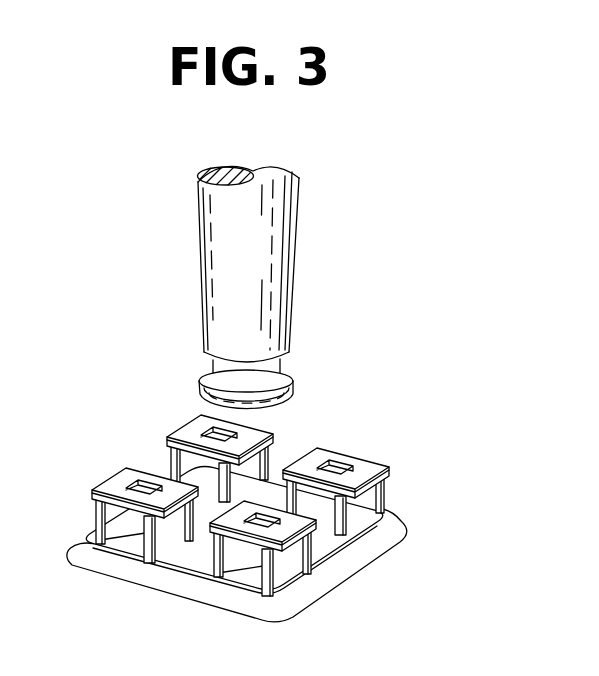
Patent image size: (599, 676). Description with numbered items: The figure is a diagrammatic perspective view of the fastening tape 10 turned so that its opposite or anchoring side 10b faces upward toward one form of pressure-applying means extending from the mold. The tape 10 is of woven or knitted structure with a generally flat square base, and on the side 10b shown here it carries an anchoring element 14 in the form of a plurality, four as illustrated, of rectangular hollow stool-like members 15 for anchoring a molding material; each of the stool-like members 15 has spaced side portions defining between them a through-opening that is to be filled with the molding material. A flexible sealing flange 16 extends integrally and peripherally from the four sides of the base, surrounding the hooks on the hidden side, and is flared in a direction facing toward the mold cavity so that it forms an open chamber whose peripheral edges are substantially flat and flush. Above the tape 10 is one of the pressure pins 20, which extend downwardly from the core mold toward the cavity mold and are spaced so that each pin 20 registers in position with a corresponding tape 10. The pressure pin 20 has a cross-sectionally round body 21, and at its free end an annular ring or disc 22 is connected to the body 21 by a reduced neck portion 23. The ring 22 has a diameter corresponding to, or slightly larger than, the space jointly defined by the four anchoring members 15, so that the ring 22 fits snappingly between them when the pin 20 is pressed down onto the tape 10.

The fastening tape 10 is at (255, 559).
The opposite surface or side 10b is at (192, 550).
The anchoring element 14 is at (225, 502).
The stool-like members 15 is at (115, 482).
The sealing flange 16 is at (237, 565).
The pressure pin 20 is at (240, 287).
The body 21 is at (249, 264).
The annular ring or disc 22 is at (293, 383).
The reduced neck portion 23 is at (281, 361).